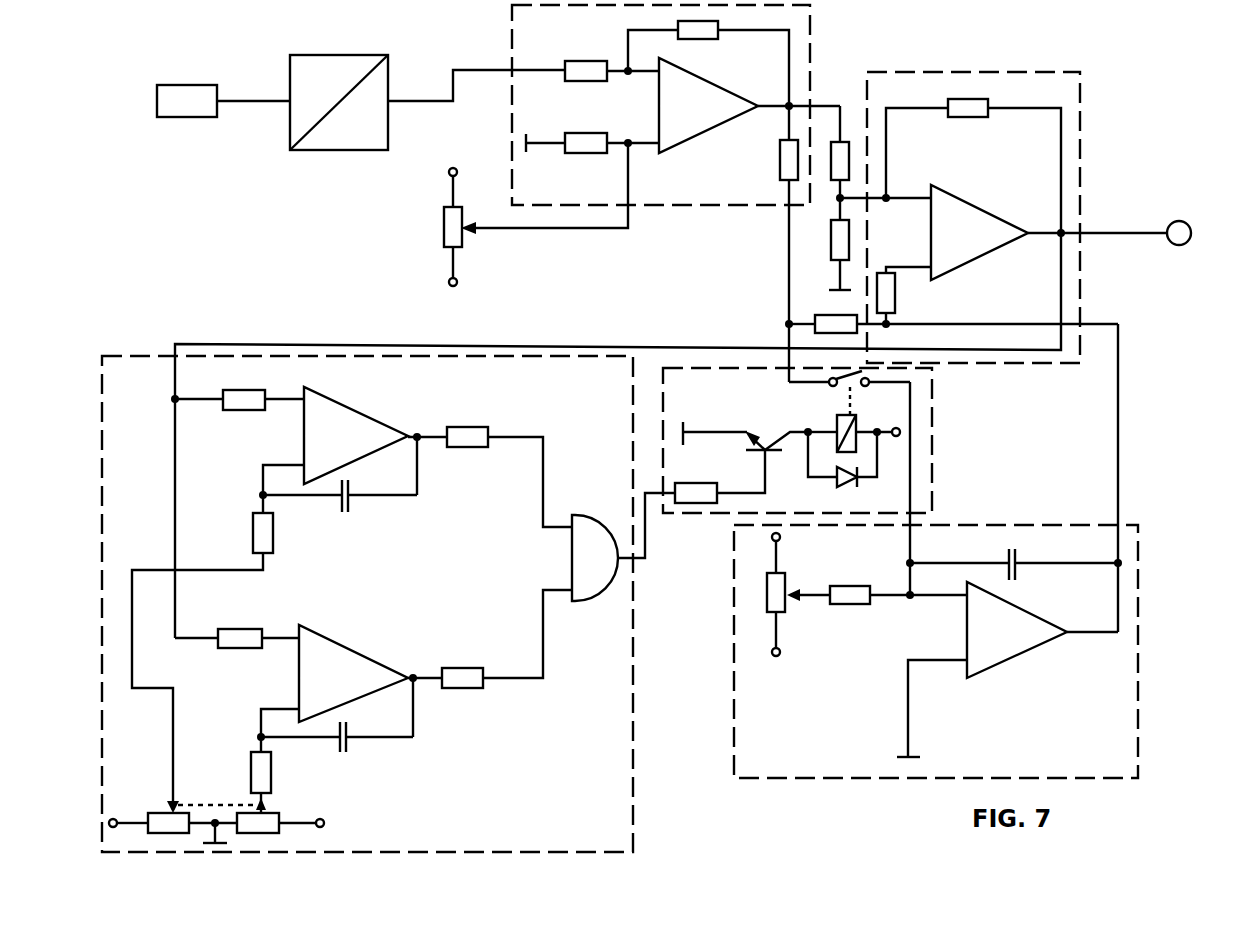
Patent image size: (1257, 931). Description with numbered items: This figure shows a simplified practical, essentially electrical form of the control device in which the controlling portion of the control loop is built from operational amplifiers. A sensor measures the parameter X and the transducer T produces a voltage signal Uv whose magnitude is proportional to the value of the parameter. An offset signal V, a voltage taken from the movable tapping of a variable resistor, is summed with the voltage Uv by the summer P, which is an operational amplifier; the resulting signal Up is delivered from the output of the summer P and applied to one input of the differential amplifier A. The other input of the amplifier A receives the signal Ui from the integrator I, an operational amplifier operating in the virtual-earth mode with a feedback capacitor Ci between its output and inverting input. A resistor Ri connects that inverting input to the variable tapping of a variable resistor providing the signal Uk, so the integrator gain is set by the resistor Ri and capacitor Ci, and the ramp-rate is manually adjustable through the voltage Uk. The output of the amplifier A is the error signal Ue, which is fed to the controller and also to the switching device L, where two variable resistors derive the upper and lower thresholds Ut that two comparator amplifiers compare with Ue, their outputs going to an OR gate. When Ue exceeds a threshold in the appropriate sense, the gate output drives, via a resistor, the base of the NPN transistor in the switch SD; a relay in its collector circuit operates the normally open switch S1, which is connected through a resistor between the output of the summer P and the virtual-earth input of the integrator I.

The parameter X is at (223, 87).
The transducer T is at (339, 89).
The transducer output signal Uv is at (476, 85).
The summing block P is at (650, 193).
The summer output signal Up is at (832, 95).
The offset signal V is at (401, 227).
The error amplifier A is at (671, 355).
The error signal Ue is at (1198, 236).
The integrator output signal Ui is at (1134, 478).
The switch SD is at (774, 481).
The normally open switch S1 is at (849, 395).
The switching device L is at (367, 604).
The threshold Ut is at (318, 803).
The integrator I is at (936, 651).
The capacitor Ci is at (1016, 557).
The resistor Ri is at (848, 582).
The integrator input signal Uk is at (793, 595).